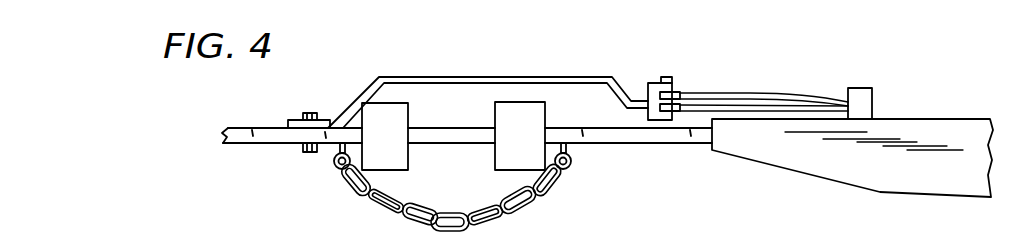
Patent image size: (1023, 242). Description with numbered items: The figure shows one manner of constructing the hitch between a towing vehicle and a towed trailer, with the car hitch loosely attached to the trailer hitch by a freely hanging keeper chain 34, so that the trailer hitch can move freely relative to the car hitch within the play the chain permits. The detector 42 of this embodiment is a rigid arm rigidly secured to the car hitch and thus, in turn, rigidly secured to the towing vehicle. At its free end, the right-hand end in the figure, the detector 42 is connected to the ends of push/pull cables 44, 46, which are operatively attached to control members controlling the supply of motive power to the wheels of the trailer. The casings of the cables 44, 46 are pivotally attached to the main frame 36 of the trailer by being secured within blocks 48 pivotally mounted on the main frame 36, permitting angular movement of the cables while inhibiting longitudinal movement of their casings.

The keeper chain 34 is at (530, 212).
The main frame 36 is at (977, 122).
The detector 42 is at (448, 78).
The push/pull cable 44 is at (693, 93).
The push/pull cable 46 is at (695, 110).
The block 48 is at (870, 98).